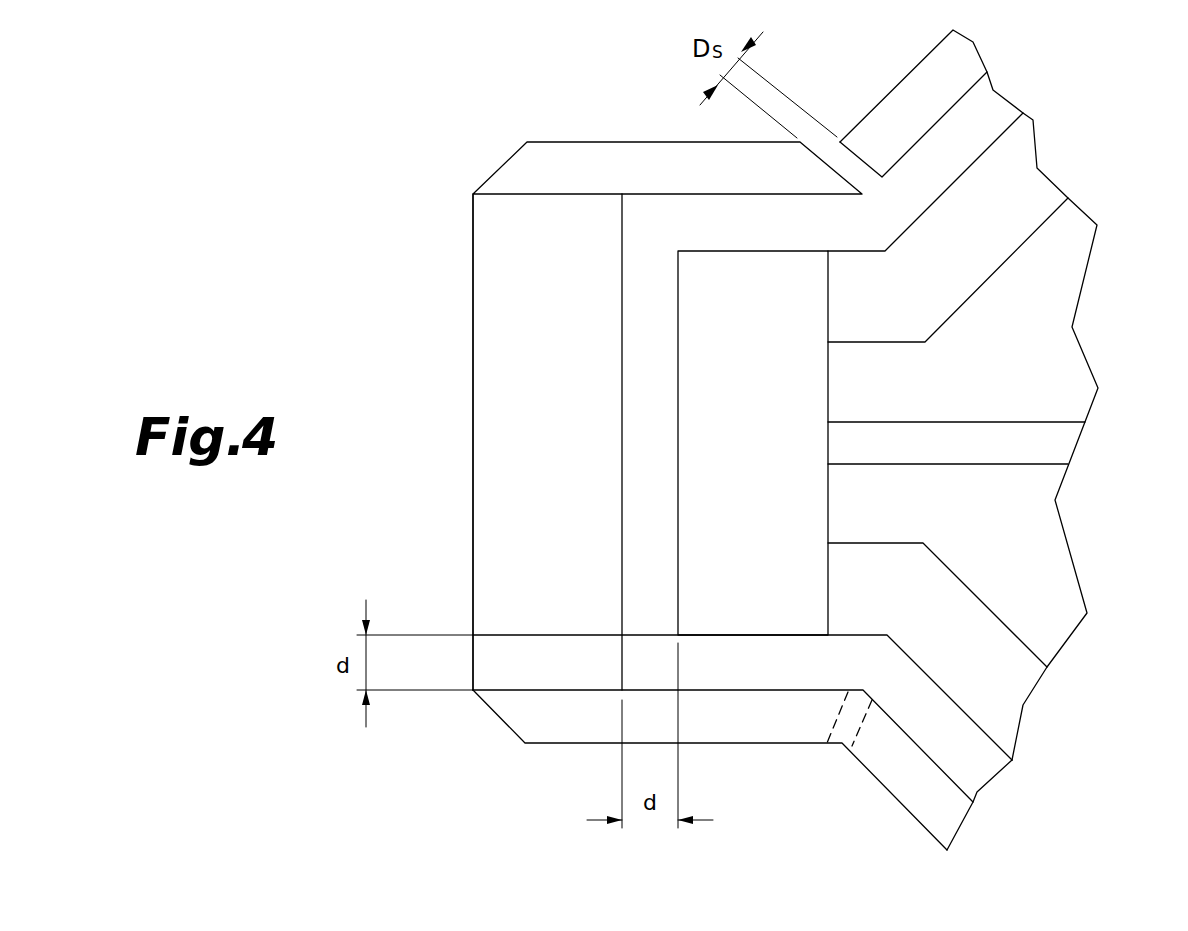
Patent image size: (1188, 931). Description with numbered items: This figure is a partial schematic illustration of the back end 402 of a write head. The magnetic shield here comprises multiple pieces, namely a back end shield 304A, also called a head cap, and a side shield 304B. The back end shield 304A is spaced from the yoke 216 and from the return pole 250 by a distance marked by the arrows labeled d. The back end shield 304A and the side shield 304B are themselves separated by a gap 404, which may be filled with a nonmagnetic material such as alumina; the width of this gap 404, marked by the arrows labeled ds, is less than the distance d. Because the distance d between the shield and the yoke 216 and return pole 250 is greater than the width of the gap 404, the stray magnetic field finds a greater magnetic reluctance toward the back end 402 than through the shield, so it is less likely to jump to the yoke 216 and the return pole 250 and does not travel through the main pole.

The back end 402 is at (276, 166).
The back end shield 304A is at (487, 434).
The side shield 304B is at (940, 67).
The yoke 216 is at (771, 457).
The return pole 250 is at (1040, 190).
The gap 404 is at (837, 737).